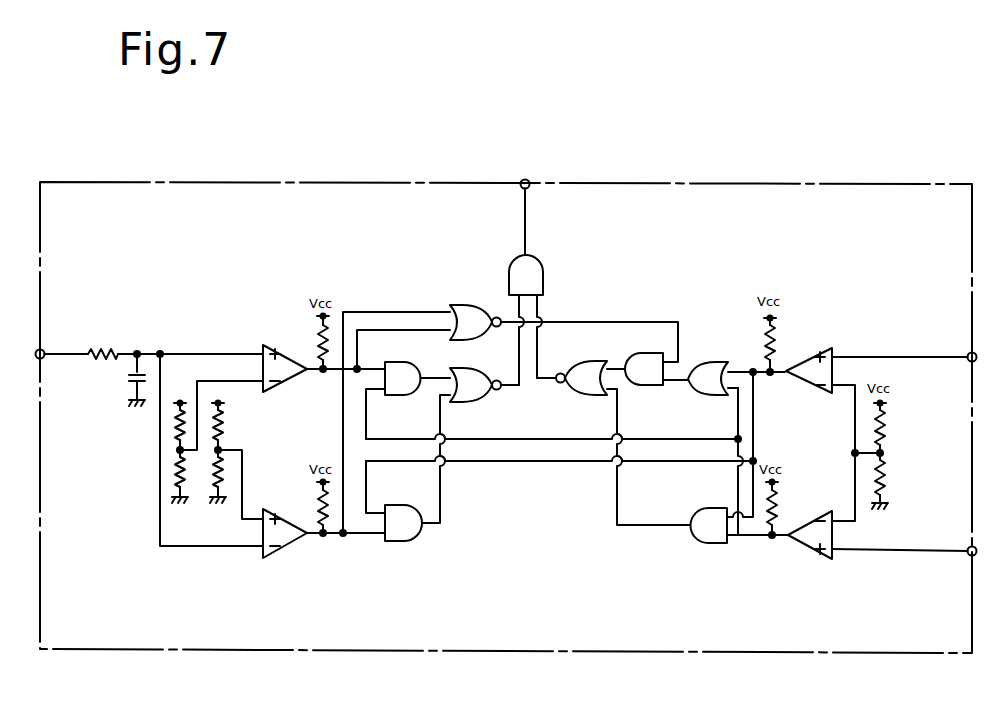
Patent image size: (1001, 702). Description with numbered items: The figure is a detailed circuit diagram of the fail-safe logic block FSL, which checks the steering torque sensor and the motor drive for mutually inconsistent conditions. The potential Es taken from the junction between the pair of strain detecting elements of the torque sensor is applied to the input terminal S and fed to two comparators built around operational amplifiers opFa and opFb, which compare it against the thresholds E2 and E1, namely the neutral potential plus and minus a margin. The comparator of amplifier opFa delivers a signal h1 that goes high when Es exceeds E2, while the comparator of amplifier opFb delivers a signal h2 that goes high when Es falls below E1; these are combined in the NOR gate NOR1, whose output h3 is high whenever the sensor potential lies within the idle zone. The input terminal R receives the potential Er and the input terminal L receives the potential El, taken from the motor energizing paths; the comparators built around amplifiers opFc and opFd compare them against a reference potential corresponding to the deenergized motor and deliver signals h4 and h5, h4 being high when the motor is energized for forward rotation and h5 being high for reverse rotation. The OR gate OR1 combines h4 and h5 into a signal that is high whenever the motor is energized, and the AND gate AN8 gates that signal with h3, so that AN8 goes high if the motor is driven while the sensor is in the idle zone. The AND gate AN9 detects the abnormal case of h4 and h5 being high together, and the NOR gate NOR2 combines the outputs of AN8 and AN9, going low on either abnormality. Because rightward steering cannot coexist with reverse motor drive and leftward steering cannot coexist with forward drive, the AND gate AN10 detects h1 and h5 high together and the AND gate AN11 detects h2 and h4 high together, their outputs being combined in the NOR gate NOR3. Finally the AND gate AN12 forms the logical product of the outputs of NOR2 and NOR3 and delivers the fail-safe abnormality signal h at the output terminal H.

The flip-flop / signal latch circuit block FSL is at (740, 183).
The input terminal S is at (28, 354).
The output terminal H is at (524, 172).
The input terminal R is at (982, 358).
The input terminal L is at (981, 553).
The input potential Es is at (163, 348).
The operational amplifier opFa is at (278, 344).
The operational amplifier opFb is at (275, 552).
The operational amplifier opFc is at (822, 345).
The operational amplifier opFd is at (828, 548).
The lower threshold potential E1 is at (244, 450).
The upper threshold potential E2 is at (246, 392).
The fail-safe abnormality signal h is at (528, 209).
The comparator output signal h1 is at (322, 372).
The comparator output signal h2 is at (323, 538).
The NOR gate output signal h3 is at (585, 322).
The comparator output signal h4 is at (559, 465).
The comparator output signal h5 is at (553, 437).
The NOR gate NOR1 is at (463, 302).
The NOR gate NOR2 is at (586, 363).
The NOR gate NOR3 is at (472, 404).
The AND gate AN8 is at (653, 390).
The AND gate AN9 is at (706, 545).
The AND gate AN10 is at (405, 396).
The AND gate AN11 is at (407, 543).
The AND gate AN12 is at (545, 272).
The OR gate OR1 is at (712, 360).
The input potential Er is at (902, 351).
The input potential El is at (905, 555).